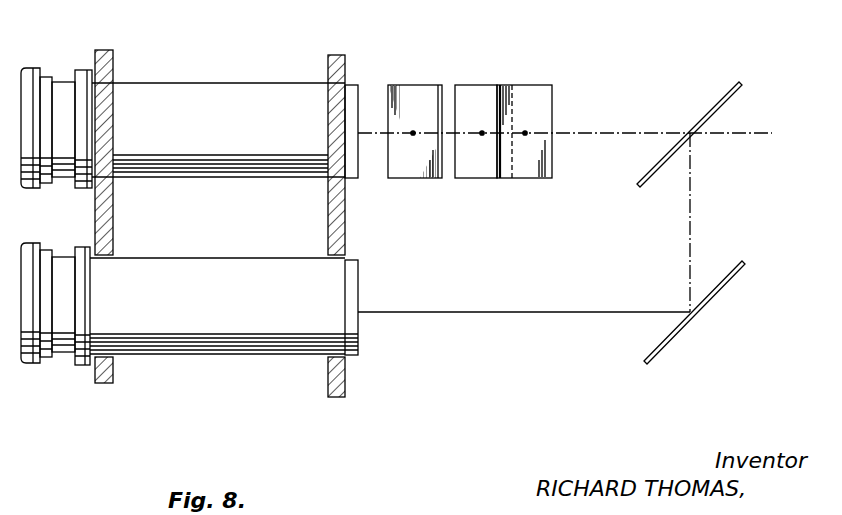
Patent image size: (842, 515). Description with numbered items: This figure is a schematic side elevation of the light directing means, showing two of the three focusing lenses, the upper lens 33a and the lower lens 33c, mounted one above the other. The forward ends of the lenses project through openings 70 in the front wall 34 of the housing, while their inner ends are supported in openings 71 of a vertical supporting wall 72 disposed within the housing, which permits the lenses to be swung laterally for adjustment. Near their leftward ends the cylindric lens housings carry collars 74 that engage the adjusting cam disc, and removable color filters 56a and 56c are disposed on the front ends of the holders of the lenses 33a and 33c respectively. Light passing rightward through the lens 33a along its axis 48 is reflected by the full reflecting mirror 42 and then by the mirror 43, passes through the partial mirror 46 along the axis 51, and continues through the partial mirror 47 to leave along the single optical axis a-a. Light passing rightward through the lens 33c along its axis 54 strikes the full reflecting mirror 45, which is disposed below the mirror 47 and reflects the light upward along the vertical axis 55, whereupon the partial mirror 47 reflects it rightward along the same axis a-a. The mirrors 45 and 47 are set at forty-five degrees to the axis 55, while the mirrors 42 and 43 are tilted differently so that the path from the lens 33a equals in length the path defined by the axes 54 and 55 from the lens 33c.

The focusing lens 33a is at (232, 94).
The focusing lens 33c is at (233, 338).
The front wall 34 is at (112, 219).
The full reflecting mirror 42 is at (484, 90).
The full reflecting mirror 43 is at (424, 176).
The full reflecting mirror 45 is at (728, 278).
The partial mirror 46 is at (549, 98).
The partial mirror 47 is at (731, 97).
The axis 48 is at (363, 131).
The axis 51 is at (660, 113).
The axis 54 is at (556, 311).
The axis 55 is at (689, 215).
The filter 56a is at (36, 72).
The filter 56c is at (40, 362).
The opening 70 is at (113, 256).
The opening 71 is at (345, 254).
The vertical supporting wall 72 is at (330, 210).
The collar 74 is at (84, 105).
The optical axis a-a is at (759, 132).